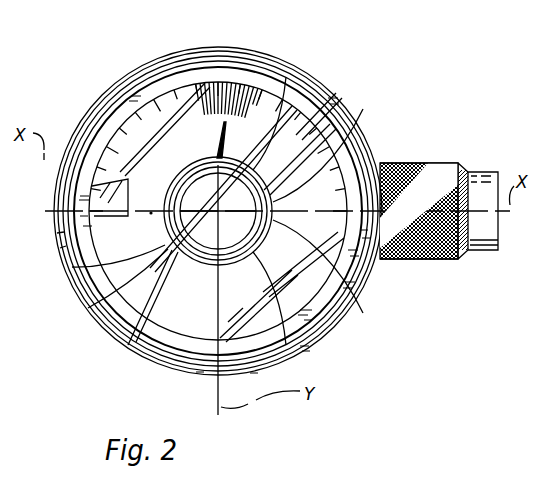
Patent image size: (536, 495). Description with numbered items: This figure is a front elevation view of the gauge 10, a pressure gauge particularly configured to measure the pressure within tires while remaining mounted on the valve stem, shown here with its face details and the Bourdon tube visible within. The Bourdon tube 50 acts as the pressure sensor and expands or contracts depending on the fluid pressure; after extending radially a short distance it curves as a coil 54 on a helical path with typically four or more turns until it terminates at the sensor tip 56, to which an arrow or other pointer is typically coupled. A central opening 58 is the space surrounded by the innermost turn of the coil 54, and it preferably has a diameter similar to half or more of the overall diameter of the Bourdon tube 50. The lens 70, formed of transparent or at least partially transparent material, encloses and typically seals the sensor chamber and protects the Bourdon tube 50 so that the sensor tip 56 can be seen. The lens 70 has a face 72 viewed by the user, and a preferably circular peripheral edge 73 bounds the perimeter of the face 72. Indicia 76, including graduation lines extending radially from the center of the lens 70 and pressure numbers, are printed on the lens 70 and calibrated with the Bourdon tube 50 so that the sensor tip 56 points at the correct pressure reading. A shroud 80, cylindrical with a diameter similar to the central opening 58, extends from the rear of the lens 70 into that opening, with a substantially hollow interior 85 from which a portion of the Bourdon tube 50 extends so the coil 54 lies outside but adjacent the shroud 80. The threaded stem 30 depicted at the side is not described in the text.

The gauge 10 is at (366, 349).
The stem 30 is at (412, 163).
The Bourdon tube 50 is at (128, 352).
The coil 54 is at (284, 356).
The sensor tip 56 is at (226, 124).
The central opening 58 is at (348, 303).
The lens 70 is at (88, 308).
The face 72 is at (244, 202).
The peripheral edge 73 is at (63, 232).
The indicia 76 is at (134, 77).
The shroud 80 is at (352, 126).
The interior 85 is at (82, 298).